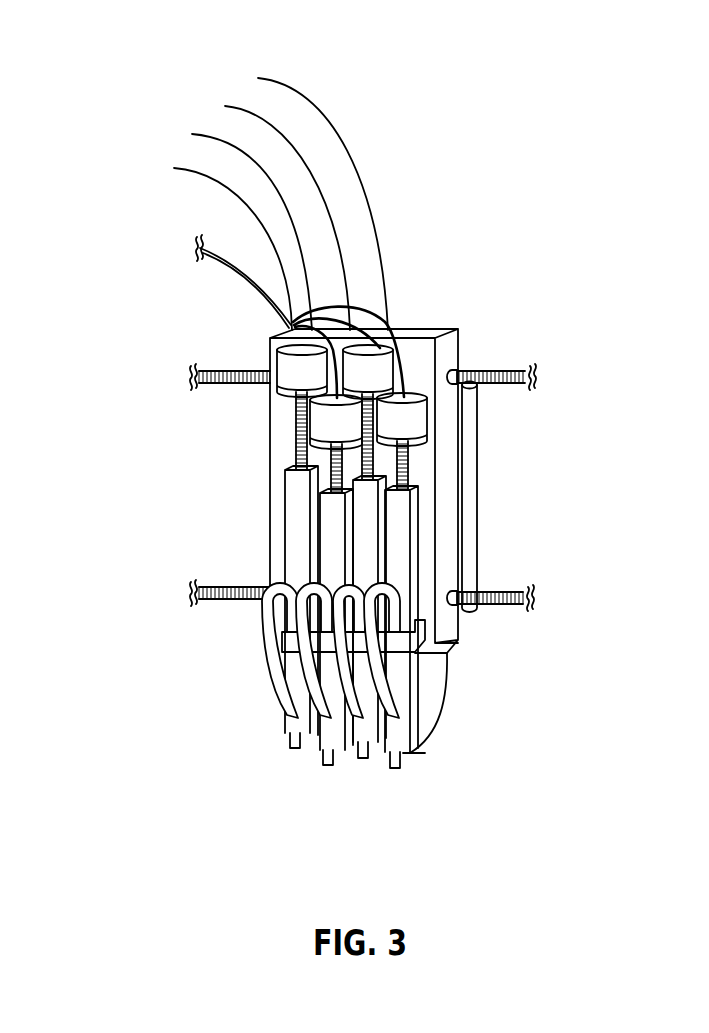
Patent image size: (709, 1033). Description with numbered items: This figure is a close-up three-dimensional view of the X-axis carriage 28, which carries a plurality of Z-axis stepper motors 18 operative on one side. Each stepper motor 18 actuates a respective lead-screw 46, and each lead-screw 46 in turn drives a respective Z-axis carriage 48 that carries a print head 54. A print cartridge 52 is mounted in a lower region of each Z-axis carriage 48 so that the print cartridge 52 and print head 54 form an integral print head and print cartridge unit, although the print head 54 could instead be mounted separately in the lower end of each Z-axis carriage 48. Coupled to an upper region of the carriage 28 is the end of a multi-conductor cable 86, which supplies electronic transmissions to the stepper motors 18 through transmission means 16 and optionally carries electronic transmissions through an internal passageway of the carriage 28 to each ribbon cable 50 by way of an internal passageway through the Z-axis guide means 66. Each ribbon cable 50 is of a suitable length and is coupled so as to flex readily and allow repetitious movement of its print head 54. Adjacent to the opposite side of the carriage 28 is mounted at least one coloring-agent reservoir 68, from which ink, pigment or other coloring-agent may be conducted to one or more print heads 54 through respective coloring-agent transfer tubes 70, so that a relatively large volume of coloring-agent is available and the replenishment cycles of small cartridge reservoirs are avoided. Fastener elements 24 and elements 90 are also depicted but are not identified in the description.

The transmission means 16 is at (267, 199).
The Z-axis stepper motor 18 is at (388, 330).
The bolts 24 is at (226, 376).
The X-axis carriage 28 is at (418, 340).
The lead-screw 46 is at (298, 458).
The Z-axis carriage 48 is at (390, 550).
The ribbon cable 50 is at (273, 667).
The print cartridge 52 is at (297, 735).
The print head 54 is at (290, 752).
The Z-axis guide means 66 is at (420, 636).
The coloring-agent reservoir 68 is at (470, 406).
The coloring-agent transfer tube 70 is at (442, 705).
The multi-conductor cable 86 is at (217, 246).
The contact elements 90 is at (290, 746).